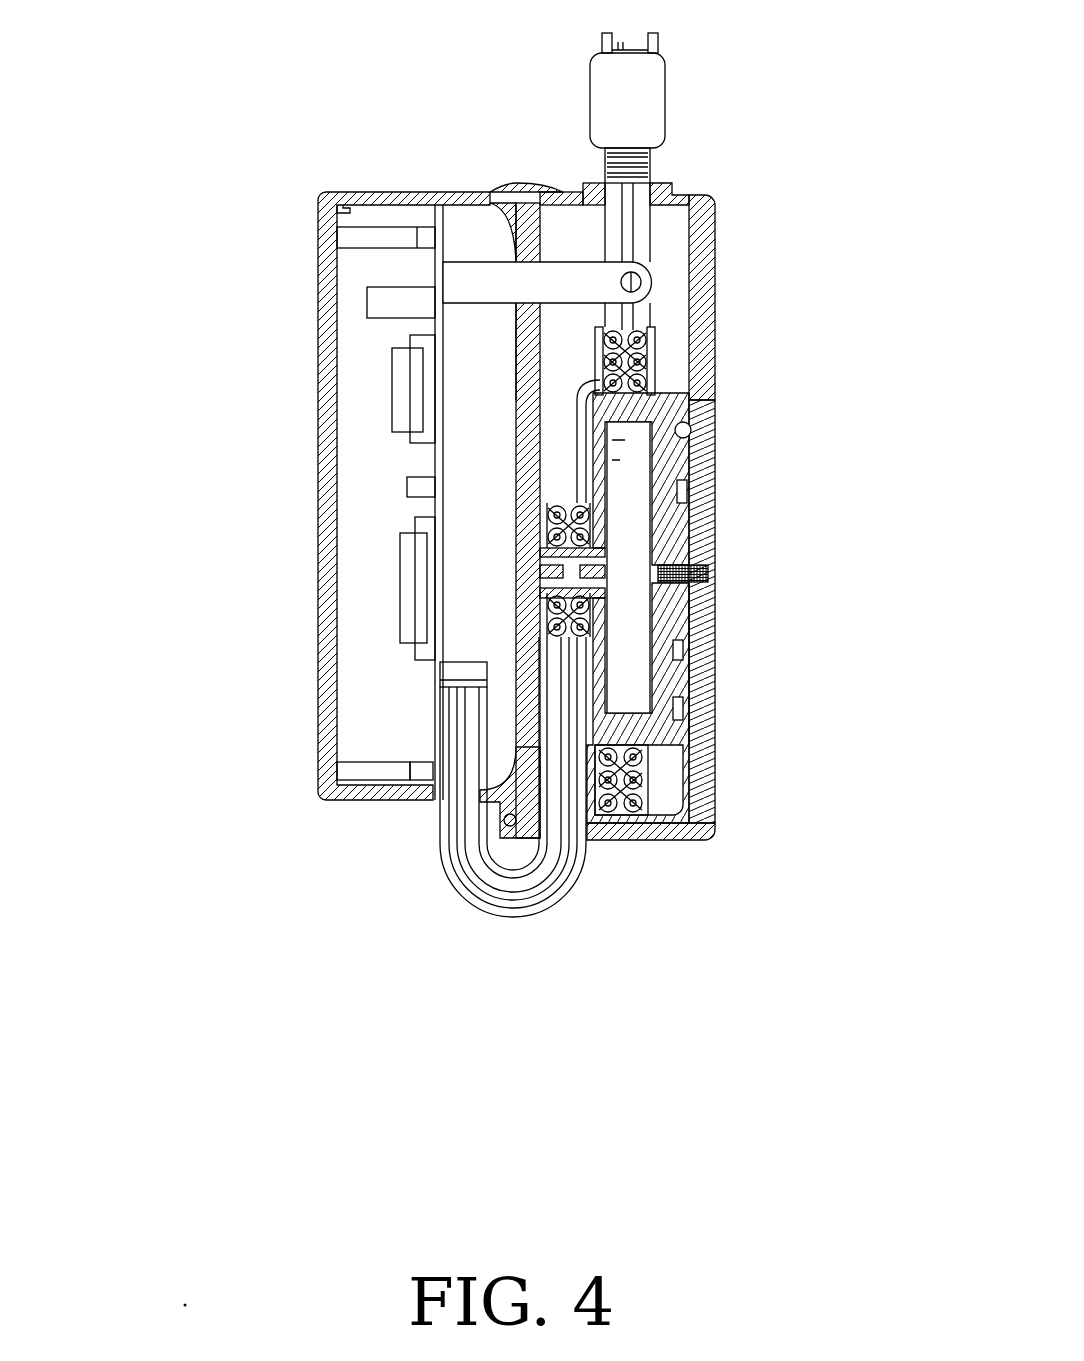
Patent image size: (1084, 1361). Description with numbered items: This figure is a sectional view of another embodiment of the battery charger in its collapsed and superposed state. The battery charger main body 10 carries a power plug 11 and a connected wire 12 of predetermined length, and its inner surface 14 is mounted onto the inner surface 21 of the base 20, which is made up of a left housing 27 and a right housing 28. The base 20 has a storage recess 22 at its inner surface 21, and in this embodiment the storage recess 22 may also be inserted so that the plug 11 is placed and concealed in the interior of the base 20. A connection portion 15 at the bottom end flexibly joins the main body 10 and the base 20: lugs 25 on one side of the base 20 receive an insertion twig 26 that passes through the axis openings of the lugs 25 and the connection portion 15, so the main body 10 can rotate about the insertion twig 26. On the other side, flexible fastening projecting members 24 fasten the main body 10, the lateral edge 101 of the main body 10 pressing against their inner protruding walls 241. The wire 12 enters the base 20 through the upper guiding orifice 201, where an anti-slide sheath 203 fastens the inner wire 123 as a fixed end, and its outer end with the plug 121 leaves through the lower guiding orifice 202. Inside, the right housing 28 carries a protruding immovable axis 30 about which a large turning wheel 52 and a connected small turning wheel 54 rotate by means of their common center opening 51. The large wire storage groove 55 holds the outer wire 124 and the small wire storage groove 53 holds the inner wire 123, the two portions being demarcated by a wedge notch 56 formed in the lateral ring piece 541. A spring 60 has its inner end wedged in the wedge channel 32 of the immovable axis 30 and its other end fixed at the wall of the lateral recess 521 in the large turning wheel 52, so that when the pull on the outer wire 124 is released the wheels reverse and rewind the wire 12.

The battery charger main body 10 is at (289, 342).
The power plug 11 is at (555, 278).
The connected wire 12 is at (428, 897).
The inner surface 14 is at (516, 358).
The connection portion 15 is at (493, 810).
The base 20 is at (740, 268).
The inner surface 21 is at (516, 328).
The storage recess 22 is at (520, 253).
The fastening projecting members 24 is at (530, 183).
The lugs 25 is at (512, 837).
The insertion twig 26 is at (510, 820).
The left housing 27 is at (627, 717).
The right housing 28 is at (522, 435).
The immovable axis 30 is at (560, 567).
The wedge channel 32 is at (640, 590).
The center opening 51 is at (665, 580).
The large turning wheel 52 is at (673, 418).
The small wire storage groove 53 is at (560, 493).
The small turning wheel 54 is at (547, 638).
The large wire storage groove 55 is at (657, 327).
The wedge notch 56 is at (653, 343).
The spring 60 is at (663, 580).
The lateral edge 101 is at (440, 205).
The plug 121 is at (653, 103).
The inner wire 123 is at (487, 662).
The outer wire 124 is at (636, 222).
The upper guiding orifice 201 is at (587, 833).
The lower guiding orifice 202 is at (660, 180).
The anti-slide sheath 203 is at (690, 827).
The inner protruding walls 241 is at (493, 187).
The lateral recess 521 is at (687, 747).
The lateral ring piece 541 is at (647, 792).